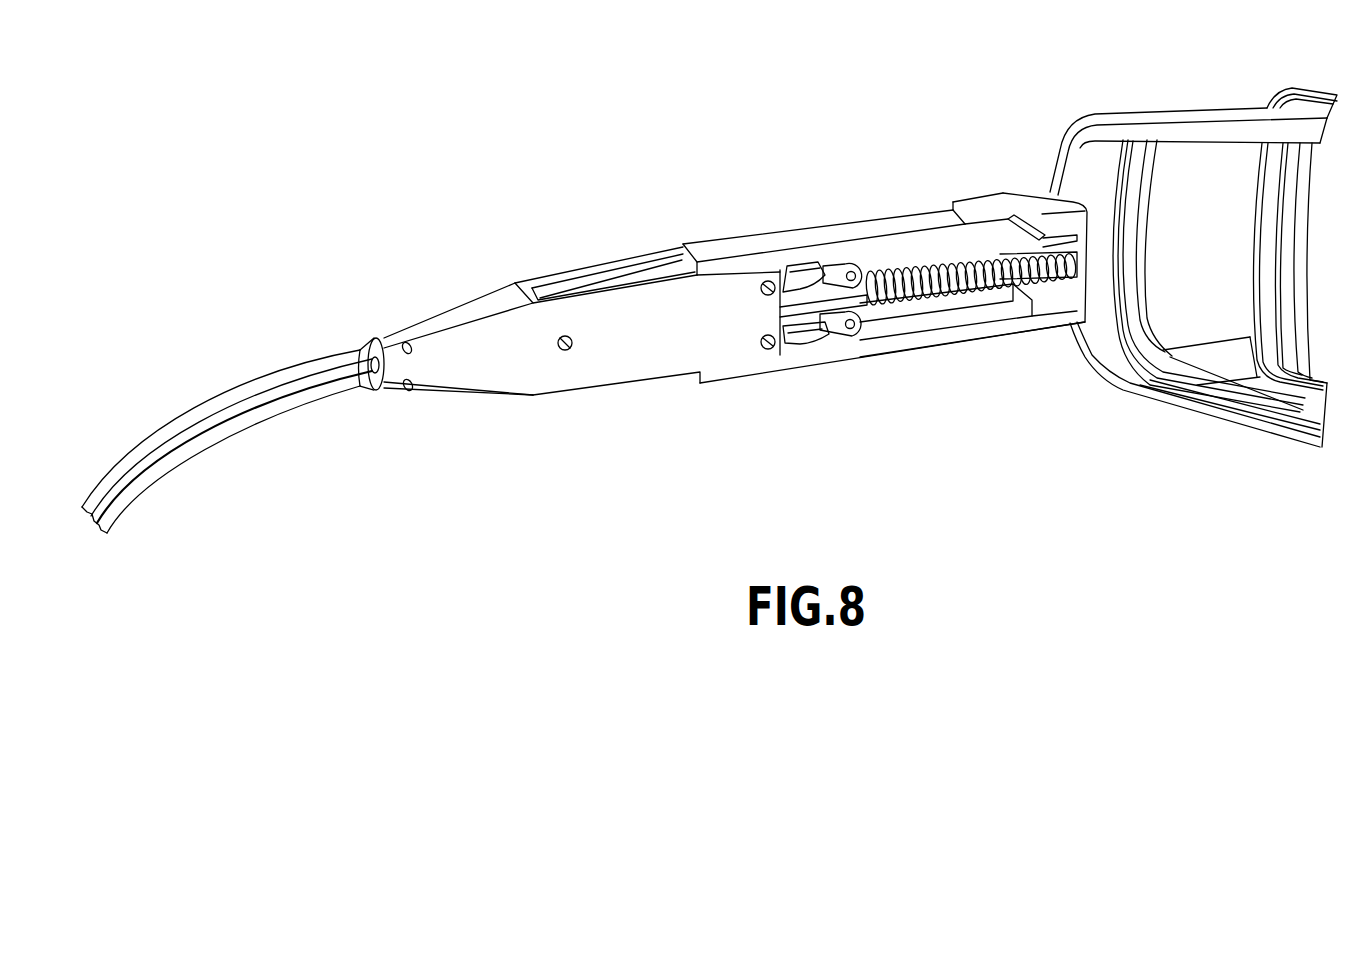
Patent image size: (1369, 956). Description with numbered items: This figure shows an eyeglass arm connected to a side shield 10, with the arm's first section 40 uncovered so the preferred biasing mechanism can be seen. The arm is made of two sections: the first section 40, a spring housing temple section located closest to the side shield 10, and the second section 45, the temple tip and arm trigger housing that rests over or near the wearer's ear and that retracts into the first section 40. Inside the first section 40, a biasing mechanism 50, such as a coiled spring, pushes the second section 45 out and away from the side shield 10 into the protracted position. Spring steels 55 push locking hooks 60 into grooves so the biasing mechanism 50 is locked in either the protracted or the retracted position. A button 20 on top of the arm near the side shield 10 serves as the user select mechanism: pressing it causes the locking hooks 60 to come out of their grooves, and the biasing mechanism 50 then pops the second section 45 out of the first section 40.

The side shield 10 is at (1253, 397).
The button 20 is at (967, 200).
The first section 40 is at (920, 352).
The second section 45 is at (549, 384).
The biasing mechanism 50 is at (983, 290).
The spring steels 55 is at (825, 264).
The locking hooks 60 is at (845, 264).